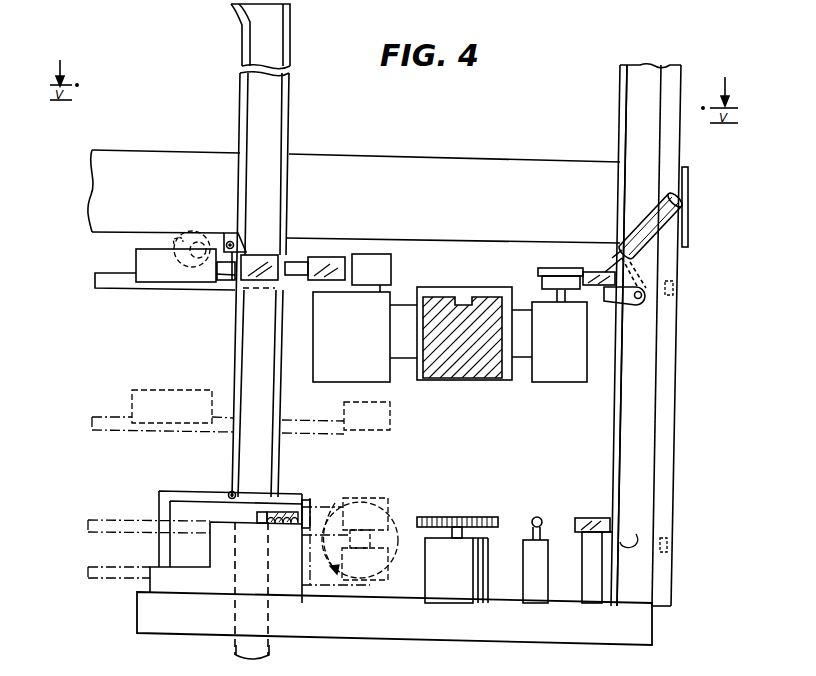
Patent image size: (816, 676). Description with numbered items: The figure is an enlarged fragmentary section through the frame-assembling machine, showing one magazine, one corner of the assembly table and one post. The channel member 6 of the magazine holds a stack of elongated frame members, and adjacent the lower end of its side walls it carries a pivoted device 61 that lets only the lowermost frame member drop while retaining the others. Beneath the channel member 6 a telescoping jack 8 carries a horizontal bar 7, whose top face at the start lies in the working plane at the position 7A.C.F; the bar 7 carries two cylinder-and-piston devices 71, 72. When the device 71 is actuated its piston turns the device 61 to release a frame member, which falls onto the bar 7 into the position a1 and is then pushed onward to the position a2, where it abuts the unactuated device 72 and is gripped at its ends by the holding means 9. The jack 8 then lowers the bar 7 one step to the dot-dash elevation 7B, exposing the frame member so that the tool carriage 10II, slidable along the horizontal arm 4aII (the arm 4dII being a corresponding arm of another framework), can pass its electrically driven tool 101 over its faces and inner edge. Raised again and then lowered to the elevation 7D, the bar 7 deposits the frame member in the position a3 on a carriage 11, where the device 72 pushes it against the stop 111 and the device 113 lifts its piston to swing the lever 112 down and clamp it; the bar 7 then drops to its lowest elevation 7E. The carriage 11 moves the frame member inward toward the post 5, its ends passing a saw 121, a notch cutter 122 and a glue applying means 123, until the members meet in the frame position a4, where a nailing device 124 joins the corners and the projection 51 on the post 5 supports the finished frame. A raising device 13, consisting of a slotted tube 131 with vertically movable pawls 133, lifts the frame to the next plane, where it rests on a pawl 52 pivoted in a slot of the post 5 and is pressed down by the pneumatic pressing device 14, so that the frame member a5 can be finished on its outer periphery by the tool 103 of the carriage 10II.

The horizontal arm 4dII is at (466, 170).
The channel member 6 is at (263, 121).
The raising device 13 is at (678, 433).
The elongated hollow tube 131 is at (662, 496).
The pawl 133 is at (678, 289).
The post 5 is at (628, 402).
The projection 51 is at (634, 532).
The jack 8 is at (237, 342).
The release device 61 is at (243, 238).
The holding means 9 is at (185, 236).
The hydraulic or pneumatic device 71 is at (176, 265).
The horizontal bar 7 is at (222, 290).
The bar positions 7A, 7C, 7F 7A.C.F is at (124, 286).
The frame member position a1 is at (267, 255).
The frame member position a2 is at (326, 258).
The hydraulic or pneumatic device 72 is at (371, 273).
The electrically driven tool 101 is at (358, 352).
The horizontal arm 4aII is at (463, 376).
The tool carriage 10II is at (512, 287).
The tool 103 is at (570, 356).
The frame member in position a5 is at (590, 272).
The pawl 52 is at (616, 302).
The pneumatic pressing device 14 is at (611, 254).
The bar elevation 7B is at (118, 433).
The bar elevation 7D is at (126, 530).
The bar elevation 7E is at (115, 579).
The carriage 11 is at (226, 548).
The lever 112 is at (216, 503).
The hydraulic or pneumatic device 113 is at (162, 564).
The stop 111 is at (263, 522).
The frame member position a3 is at (290, 525).
The saw 121 is at (397, 526).
The notch cutter 122 is at (480, 562).
The glue applying means 123 is at (540, 588).
The automatic nailing device 124 is at (578, 543).
The frame member in position a4 is at (601, 523).